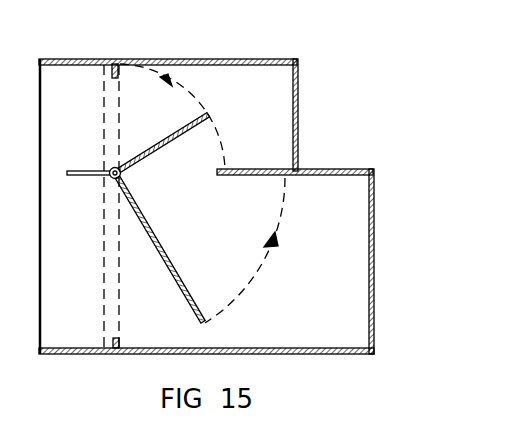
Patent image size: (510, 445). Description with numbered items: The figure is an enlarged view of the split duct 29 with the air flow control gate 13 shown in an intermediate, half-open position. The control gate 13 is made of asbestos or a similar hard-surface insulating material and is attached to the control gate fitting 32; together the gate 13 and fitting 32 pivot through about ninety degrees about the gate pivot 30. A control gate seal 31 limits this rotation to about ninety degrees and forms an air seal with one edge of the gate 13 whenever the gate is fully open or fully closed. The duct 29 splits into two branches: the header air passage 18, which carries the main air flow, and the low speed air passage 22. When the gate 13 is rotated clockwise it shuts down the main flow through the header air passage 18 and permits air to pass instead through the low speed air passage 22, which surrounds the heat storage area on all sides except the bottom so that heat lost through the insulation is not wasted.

The air flow control gate 13 is at (172, 249).
The header air passage 18 is at (273, 250).
The low speed air passage 22 is at (192, 116).
The split duct 29 is at (315, 169).
The gate pivot 30 is at (85, 204).
The control gate seal 31 is at (119, 187).
The control gate fitting 32 is at (164, 140).